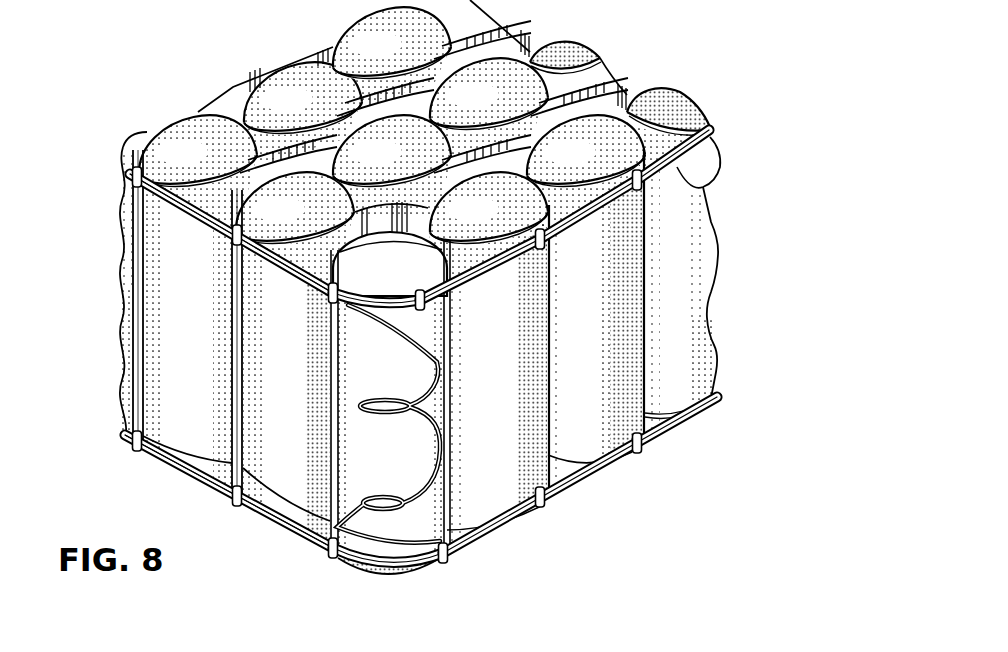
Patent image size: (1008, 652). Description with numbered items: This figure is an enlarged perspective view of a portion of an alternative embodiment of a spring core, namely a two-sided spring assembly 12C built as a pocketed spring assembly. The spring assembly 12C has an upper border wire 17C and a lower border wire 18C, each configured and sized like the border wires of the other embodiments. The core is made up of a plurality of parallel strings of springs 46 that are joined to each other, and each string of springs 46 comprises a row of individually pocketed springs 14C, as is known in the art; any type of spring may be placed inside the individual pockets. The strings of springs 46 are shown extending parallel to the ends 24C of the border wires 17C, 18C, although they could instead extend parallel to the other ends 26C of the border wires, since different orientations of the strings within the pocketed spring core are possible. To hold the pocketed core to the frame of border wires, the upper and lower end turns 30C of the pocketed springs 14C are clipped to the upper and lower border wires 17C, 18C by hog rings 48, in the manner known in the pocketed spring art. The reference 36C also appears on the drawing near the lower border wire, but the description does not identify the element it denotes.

The spring assembly 12C is at (118, 109).
The pocketed spring 14C is at (427, 394).
The upper border wire 17C is at (210, 232).
The lower border wire 18C is at (201, 483).
The end of border wire 24C is at (704, 187).
The end of border wire 26C is at (175, 201).
The end turn 30C is at (428, 275).
The rod end connector 36C is at (642, 451).
The string of springs 46 is at (547, 50).
The hog ring 48 is at (547, 247).